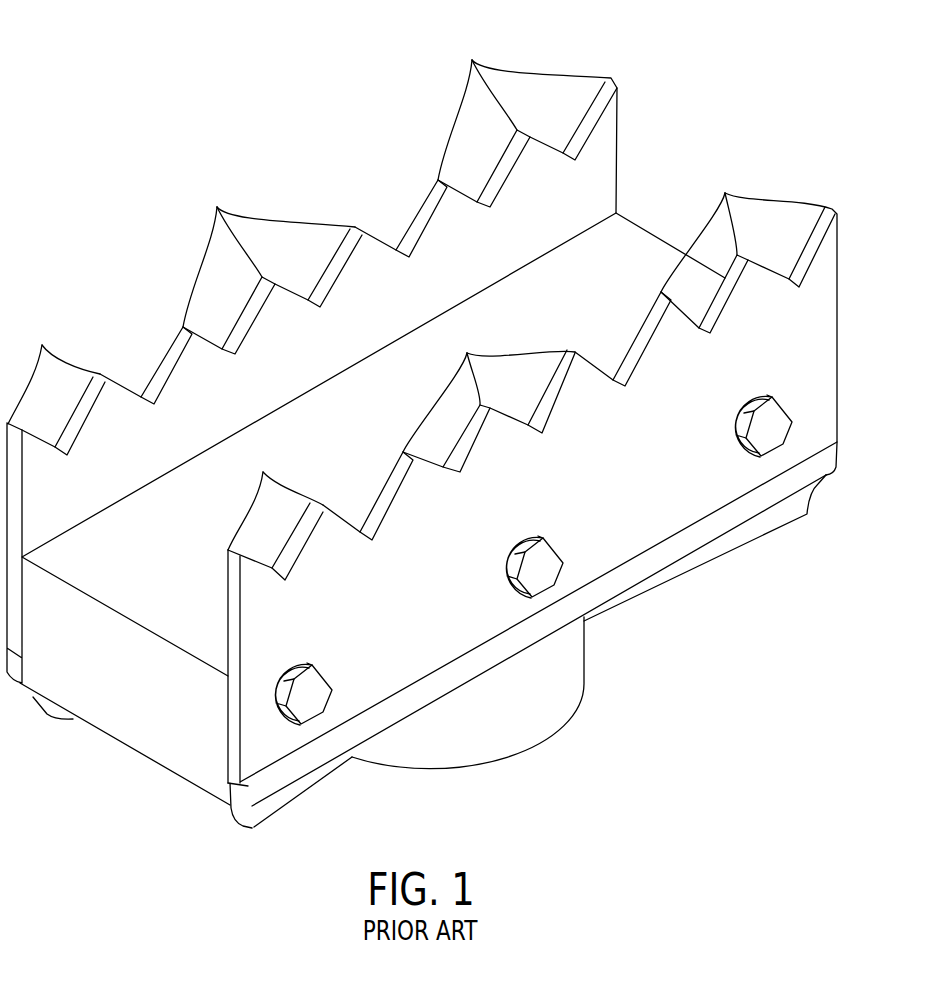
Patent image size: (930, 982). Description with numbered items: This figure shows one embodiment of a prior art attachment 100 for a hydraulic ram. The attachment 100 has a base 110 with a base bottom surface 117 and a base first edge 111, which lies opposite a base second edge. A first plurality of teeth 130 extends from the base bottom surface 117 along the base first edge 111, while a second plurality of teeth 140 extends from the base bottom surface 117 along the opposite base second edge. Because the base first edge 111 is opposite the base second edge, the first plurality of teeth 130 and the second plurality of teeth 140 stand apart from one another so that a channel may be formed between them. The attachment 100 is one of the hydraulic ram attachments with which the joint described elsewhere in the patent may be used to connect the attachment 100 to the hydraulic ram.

The attachment 100 is at (143, 88).
The base 110 is at (135, 738).
The base first edge 111 is at (624, 580).
The base bottom surface 117 is at (652, 246).
The first plurality of teeth 130 is at (725, 193).
The second plurality of teeth 140 is at (472, 60).